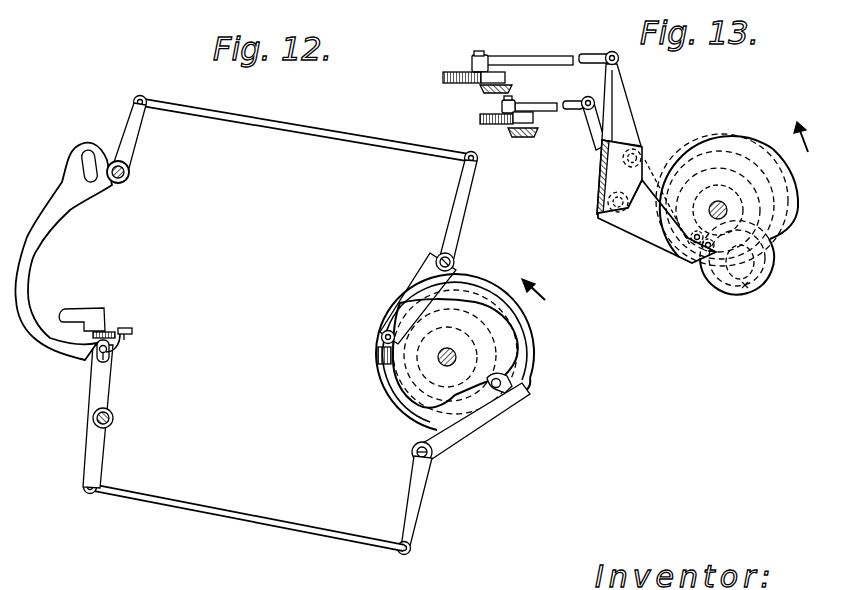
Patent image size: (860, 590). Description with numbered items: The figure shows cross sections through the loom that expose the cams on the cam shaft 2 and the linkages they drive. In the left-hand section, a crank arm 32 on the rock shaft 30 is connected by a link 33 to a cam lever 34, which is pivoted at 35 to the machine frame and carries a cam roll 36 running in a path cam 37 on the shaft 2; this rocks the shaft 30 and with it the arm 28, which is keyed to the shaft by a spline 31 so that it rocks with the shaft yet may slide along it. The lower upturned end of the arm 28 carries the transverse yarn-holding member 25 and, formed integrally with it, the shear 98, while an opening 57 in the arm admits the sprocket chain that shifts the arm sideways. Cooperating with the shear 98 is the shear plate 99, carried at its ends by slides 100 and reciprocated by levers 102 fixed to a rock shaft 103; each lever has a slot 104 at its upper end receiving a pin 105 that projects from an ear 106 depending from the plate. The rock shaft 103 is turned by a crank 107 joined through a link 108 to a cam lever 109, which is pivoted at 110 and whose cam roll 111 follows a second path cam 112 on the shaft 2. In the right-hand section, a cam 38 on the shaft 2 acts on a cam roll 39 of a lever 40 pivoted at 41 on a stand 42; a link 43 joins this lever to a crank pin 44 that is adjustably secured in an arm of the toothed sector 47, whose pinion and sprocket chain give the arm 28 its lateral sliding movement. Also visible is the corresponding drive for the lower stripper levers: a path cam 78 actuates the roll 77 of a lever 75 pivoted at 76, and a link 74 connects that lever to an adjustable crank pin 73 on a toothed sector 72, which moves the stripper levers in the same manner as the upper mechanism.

In FIG. 12, the cam shaft 2 is at (457, 357).
In FIG. 13, the cam shaft 2 is at (724, 204).
In FIG. 12, the transverse member 25 is at (134, 331).
In FIG. 12, the arm 28 is at (42, 238).
In FIG. 12, the rock shaft 30 is at (130, 174).
In FIG. 12, the spline 31 is at (112, 182).
In FIG. 12, the crank arm 32 is at (134, 132).
In FIG. 12, the link 33 is at (356, 138).
In FIG. 12, the cam lever 34 is at (455, 208).
In FIG. 12, the pivot 35 is at (455, 258).
In FIG. 12, the cam roll 36 is at (382, 334).
In FIG. 12, the path cam 37 is at (513, 318).
In FIG. 13, the cam 38 is at (714, 136).
In FIG. 13, the cam roll 39 is at (680, 248).
In FIG. 13, the lever 40 is at (624, 104).
In FIG. 13, the pivot 41 is at (640, 165).
In FIG. 13, the stand 42 is at (595, 176).
In FIG. 13, the link 43 is at (537, 56).
In FIG. 13, the crank pin 44 is at (478, 51).
In FIG. 13, the toothed sector 47 is at (505, 78).
In FIG. 12, the openings 57 is at (90, 152).
In FIG. 13, the toothed sector 72 is at (534, 124).
In FIG. 13, the adjustable crank pin 73 is at (490, 92).
In FIG. 13, the link 74 is at (545, 103).
In FIG. 13, the lever 75 is at (592, 128).
In FIG. 13, the pivot 76 is at (610, 212).
In FIG. 13, the roll 77 is at (700, 250).
In FIG. 13, the path cam 78 is at (748, 290).
In FIG. 12, the shear 98 is at (124, 340).
In FIG. 12, the shear 99 is at (96, 338).
In FIG. 12, the slide 100 is at (90, 310).
In FIG. 12, the lever 102 is at (100, 398).
In FIG. 12, the rock shaft 103 is at (113, 420).
In FIG. 12, the slot 104 is at (100, 350).
In FIG. 12, the pin 105 is at (104, 353).
In FIG. 12, the ear 106 is at (108, 358).
In FIG. 12, the crank 107 is at (100, 466).
In FIG. 12, the link 108 is at (250, 520).
In FIG. 12, the cam lever 109 is at (414, 505).
In FIG. 12, the pivot 110 is at (417, 452).
In FIG. 12, the cam roll 111 is at (515, 396).
In FIG. 12, the path cam 112 is at (410, 366).